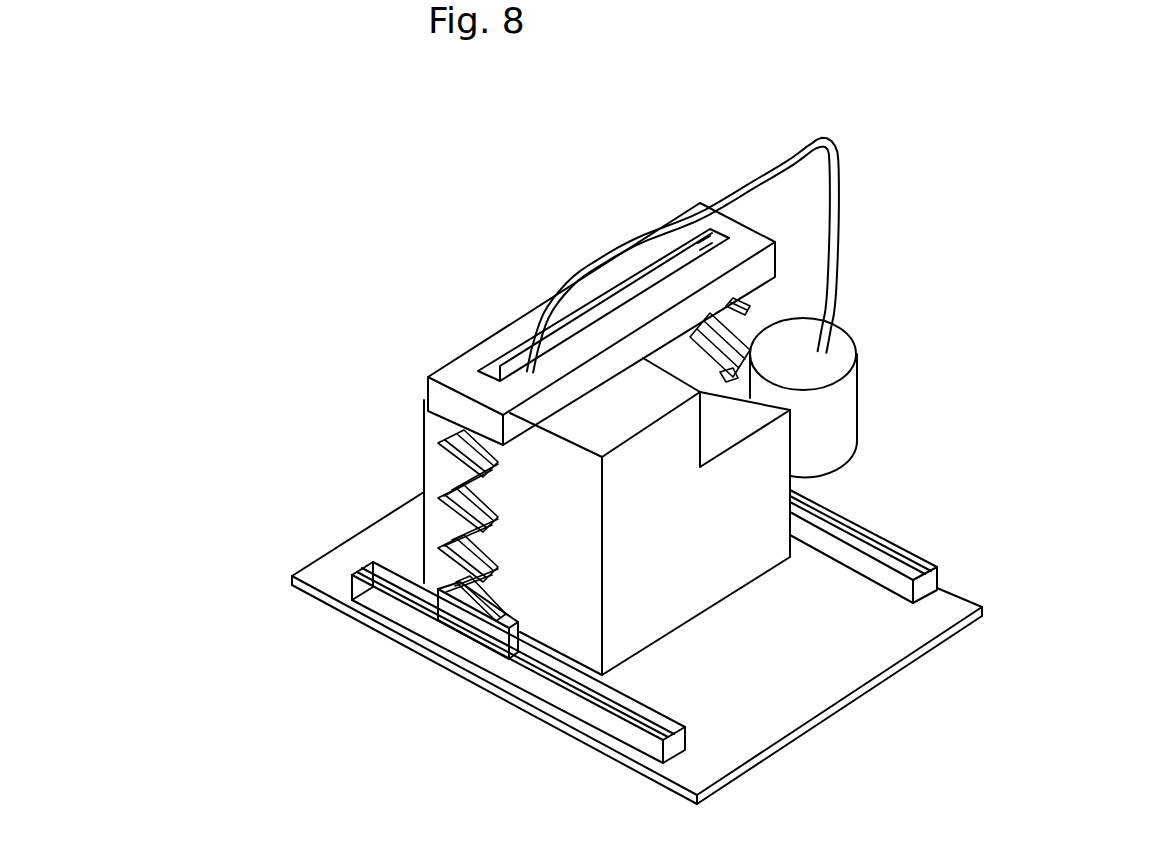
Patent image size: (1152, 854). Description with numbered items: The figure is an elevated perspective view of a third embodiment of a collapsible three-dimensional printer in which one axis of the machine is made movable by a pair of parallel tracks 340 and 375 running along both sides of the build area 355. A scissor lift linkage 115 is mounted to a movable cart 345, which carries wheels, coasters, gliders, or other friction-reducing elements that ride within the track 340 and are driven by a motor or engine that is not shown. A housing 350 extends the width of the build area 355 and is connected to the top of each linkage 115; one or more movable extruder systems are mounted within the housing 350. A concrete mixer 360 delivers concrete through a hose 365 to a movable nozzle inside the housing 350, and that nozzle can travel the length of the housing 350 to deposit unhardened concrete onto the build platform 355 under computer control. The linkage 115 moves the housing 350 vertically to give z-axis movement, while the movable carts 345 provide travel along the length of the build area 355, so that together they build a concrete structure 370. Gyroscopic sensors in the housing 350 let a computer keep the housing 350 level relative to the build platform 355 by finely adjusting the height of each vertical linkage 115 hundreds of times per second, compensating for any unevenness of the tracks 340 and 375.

The scissor lift linkage 115 is at (442, 491).
The track 340 is at (397, 589).
The movable cart 345 is at (452, 610).
The housing 350 is at (457, 382).
The build area 355 is at (782, 658).
The concrete mixer 360 is at (815, 377).
The hose 365 is at (826, 298).
The concrete structure 370 is at (700, 508).
The track 375 is at (867, 543).